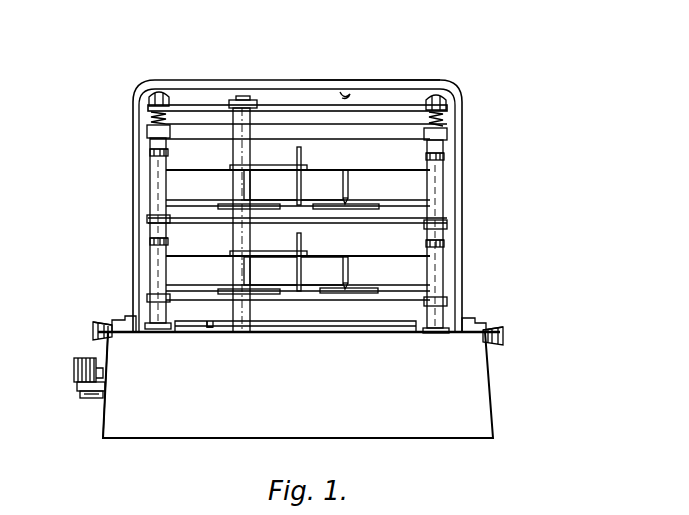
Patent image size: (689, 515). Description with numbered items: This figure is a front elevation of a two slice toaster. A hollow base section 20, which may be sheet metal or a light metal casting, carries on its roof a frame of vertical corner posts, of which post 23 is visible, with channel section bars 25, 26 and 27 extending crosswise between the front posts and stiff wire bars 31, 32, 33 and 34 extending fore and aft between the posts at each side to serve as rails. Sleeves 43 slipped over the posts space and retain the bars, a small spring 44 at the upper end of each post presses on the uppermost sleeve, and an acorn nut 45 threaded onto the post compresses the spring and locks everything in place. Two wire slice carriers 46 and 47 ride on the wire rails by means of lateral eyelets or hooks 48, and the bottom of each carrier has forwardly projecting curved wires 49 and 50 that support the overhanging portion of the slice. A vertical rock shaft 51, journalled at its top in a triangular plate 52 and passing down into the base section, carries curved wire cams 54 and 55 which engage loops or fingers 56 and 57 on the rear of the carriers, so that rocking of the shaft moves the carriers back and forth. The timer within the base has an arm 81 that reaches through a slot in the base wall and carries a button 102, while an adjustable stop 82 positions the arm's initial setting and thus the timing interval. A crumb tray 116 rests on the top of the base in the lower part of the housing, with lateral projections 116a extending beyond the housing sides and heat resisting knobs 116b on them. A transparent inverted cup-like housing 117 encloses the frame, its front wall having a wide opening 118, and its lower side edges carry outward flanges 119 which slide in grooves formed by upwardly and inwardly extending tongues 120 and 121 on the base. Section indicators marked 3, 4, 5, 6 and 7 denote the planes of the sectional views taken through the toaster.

The section line 3- 3 is at (133, 26).
The section line 4- 4 is at (318, 478).
The section line 5- 5 is at (180, 341).
The section line 6- 6 is at (284, 360).
The section line 7- 7 is at (133, 88).
The base section 20 is at (299, 385).
The corner post 23 is at (141, 191).
The bar 25 is at (388, 112).
The bar 26 is at (380, 229).
The bar 27 is at (360, 299).
The bar 31 is at (150, 153).
The bar 32 is at (150, 241).
The bar 33 is at (445, 157).
The bar 34 is at (445, 243).
The sleeve 43 is at (150, 170).
The spring 44 is at (150, 118).
The acorn nut 45 is at (165, 100).
The slice carrier 46 is at (364, 166).
The slice carrier 47 is at (332, 251).
The eyelets or hooks 48 is at (170, 152).
The curved wire 49 is at (280, 202).
The curved wire 50 is at (324, 206).
The rock shaft 51 is at (247, 145).
The triangular plate 52 is at (212, 105).
The curved wire element or cam 54 is at (283, 158).
The curved wire element or cam 55 is at (280, 251).
The loop or finger 56 is at (301, 150).
The loop or finger 57 is at (309, 238).
The arm 81 is at (78, 386).
The adjustable stop 82 is at (86, 398).
The button 102 is at (74, 372).
The tray 116 is at (222, 332).
The lateral projection 116a is at (133, 333).
The knob 116b is at (500, 378).
The housing 117 is at (391, 74).
The opening 118 is at (345, 90).
The flange 119 is at (130, 334).
The tongue 120 is at (125, 319).
The tongue 121 is at (472, 318).